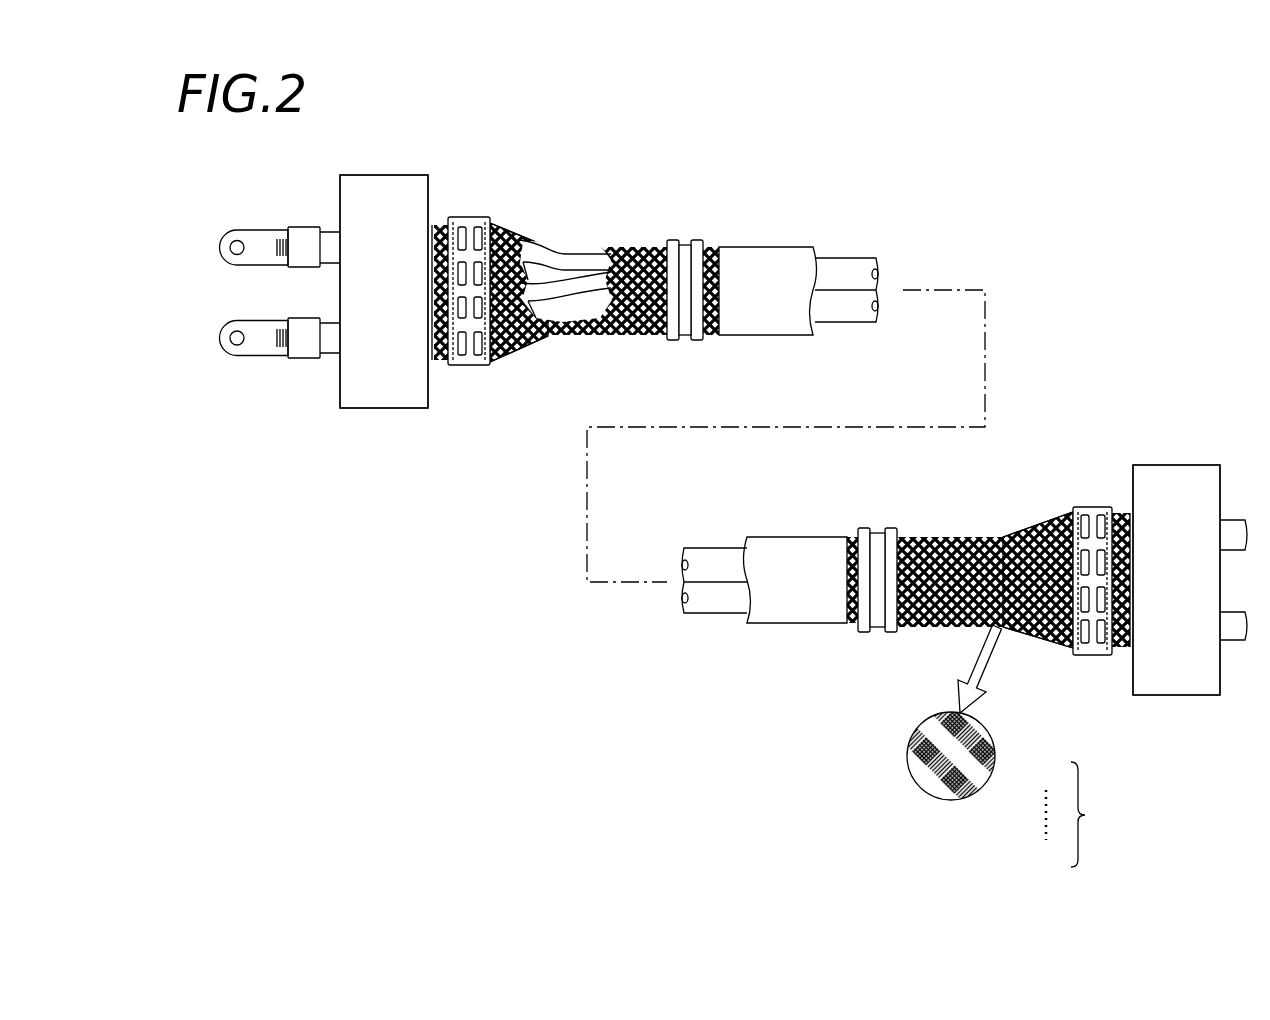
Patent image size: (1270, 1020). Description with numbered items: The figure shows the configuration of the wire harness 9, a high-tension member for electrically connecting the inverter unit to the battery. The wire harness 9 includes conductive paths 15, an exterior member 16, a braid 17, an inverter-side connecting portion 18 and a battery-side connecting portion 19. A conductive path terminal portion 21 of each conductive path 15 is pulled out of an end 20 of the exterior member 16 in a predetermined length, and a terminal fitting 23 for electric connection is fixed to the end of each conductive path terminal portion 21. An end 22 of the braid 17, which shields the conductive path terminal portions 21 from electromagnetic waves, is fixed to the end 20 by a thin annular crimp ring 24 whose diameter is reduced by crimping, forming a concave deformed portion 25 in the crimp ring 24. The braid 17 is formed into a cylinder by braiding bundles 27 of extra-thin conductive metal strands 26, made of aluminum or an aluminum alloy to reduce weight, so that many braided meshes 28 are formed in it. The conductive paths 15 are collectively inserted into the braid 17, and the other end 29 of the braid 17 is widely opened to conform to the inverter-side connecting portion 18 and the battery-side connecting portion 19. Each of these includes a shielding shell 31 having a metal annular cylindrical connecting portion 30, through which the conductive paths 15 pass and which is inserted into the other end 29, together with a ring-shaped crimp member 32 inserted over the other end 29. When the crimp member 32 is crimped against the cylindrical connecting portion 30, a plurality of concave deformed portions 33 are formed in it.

The wire harness 9 is at (1094, 270).
The conductive path 15 is at (862, 302).
The exterior member 16 is at (776, 335).
The braid 17 is at (520, 358).
The inverter-side connecting portion 18 is at (382, 414).
The battery-side connecting portion 19 is at (1126, 470).
The end of the exterior member 20 is at (627, 247).
The conductive path terminal portion 21 is at (552, 268).
The end of the braid 22 is at (712, 262).
The terminal fitting 23 is at (262, 238).
The crimp ring 24 is at (685, 240).
The concave deformed portion 25 is at (685, 340).
The metal strand 26 is at (993, 760).
The bundle of metal strands 27 is at (1081, 814).
The braided mesh 28 is at (930, 797).
The other end of the braid 29 is at (440, 224).
The cylindrical connecting portion 30 is at (434, 366).
The shielding shell 31 is at (382, 184).
The crimp member 32 is at (468, 366).
The deformed portion 33 is at (478, 227).